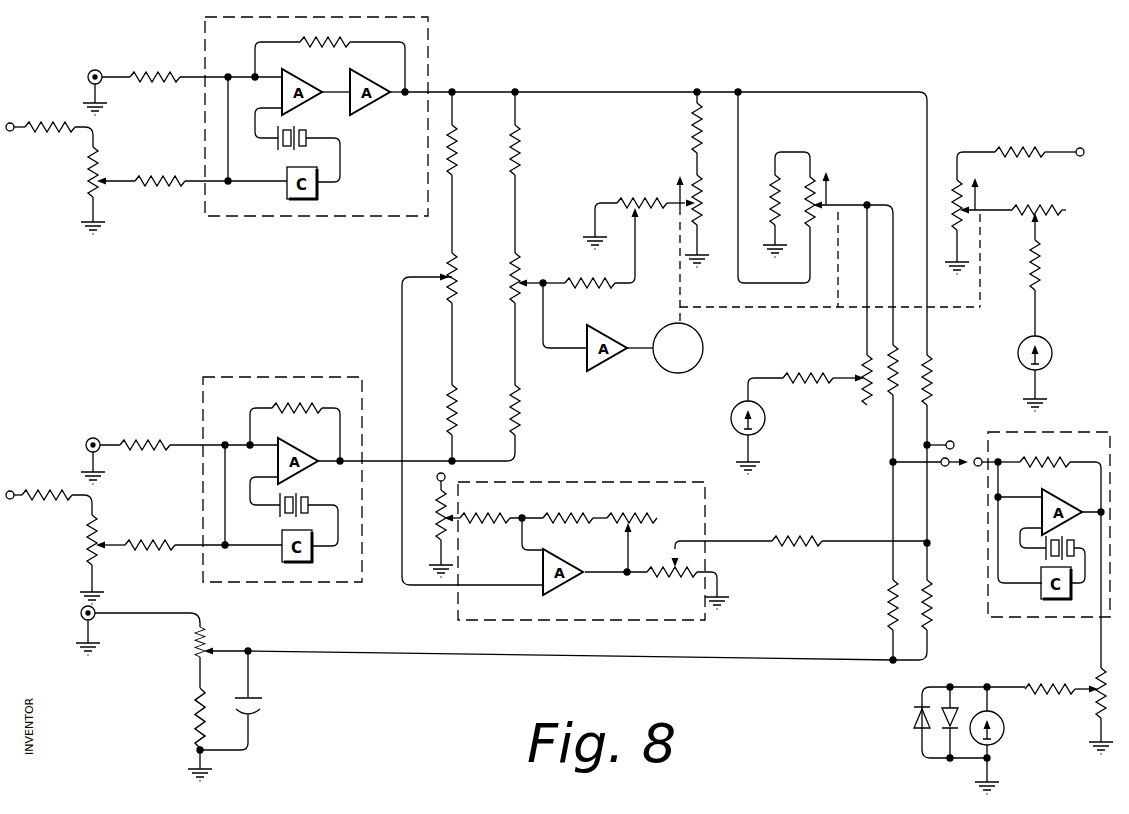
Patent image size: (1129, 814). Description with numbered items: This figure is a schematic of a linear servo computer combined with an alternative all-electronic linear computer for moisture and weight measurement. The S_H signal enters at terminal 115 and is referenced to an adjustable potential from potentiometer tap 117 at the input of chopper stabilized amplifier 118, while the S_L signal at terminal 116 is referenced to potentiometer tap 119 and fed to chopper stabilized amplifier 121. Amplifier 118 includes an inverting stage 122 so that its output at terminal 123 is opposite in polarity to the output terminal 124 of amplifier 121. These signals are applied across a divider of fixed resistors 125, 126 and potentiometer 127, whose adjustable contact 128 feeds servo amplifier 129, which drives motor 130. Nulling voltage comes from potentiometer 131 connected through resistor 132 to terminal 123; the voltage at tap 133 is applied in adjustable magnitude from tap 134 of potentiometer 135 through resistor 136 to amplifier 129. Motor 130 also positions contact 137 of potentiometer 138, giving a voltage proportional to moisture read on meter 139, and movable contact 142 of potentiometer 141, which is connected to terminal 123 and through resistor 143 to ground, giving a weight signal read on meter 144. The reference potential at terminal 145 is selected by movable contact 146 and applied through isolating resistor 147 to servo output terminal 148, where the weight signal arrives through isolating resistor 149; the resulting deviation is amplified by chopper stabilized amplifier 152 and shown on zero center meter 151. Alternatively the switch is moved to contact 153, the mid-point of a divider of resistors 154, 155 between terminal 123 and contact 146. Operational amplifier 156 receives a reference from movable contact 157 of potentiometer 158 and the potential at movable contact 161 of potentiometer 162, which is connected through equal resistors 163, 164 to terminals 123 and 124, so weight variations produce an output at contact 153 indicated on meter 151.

The input terminal 115 is at (97, 68).
The input terminal 116 is at (96, 437).
The potentiometer tap 117 is at (110, 178).
The chopper stabilized amplifier 118 is at (316, 134).
The potentiometer tap 119 is at (108, 541).
The chopper stabilized amplifier 121 is at (283, 375).
The inverting stage 122 is at (368, 105).
The output terminal 123 is at (454, 88).
The output terminal 124 is at (449, 460).
The fixed resistor 125 is at (520, 153).
The fixed resistor 126 is at (520, 413).
The potentiometer 127 is at (520, 275).
The adjustable contact 128 is at (548, 290).
The servo amplifier 129 is at (606, 357).
The motor 130 is at (679, 373).
The potentiometer 131 is at (702, 193).
The resistor 132 is at (694, 128).
The tap 133 is at (678, 205).
The tap 134 is at (634, 209).
The potentiometer 135 is at (637, 196).
The resistor 136 is at (600, 290).
The contact 137 is at (980, 209).
The potentiometer 138 is at (961, 186).
The meter 139 is at (1049, 346).
The potentiometer 141 is at (814, 186).
The movable contact 142 is at (840, 203).
The resistor 143 is at (772, 174).
The meter 144 is at (766, 420).
The reference potential terminal 145 is at (80, 618).
The movable contact 146 is at (220, 648).
The isolating resistor 147 is at (886, 606).
The servo output terminal 148 is at (947, 467).
The isolating resistor 149 is at (894, 398).
The zero center meter 151 is at (1005, 728).
The chopper stabilized D.C. amplifier 152 is at (1022, 618).
The contact 153 is at (944, 434).
The resistor 154 is at (932, 378).
The resistor 155 is at (932, 613).
The operational amplifier 156 is at (674, 537).
The movable contact 157 is at (458, 514).
The potentiometer 158 is at (448, 527).
The movable contact 161 is at (440, 280).
The potentiometer 162 is at (458, 278).
The resistor 163 is at (458, 163).
The resistor 164 is at (458, 420).